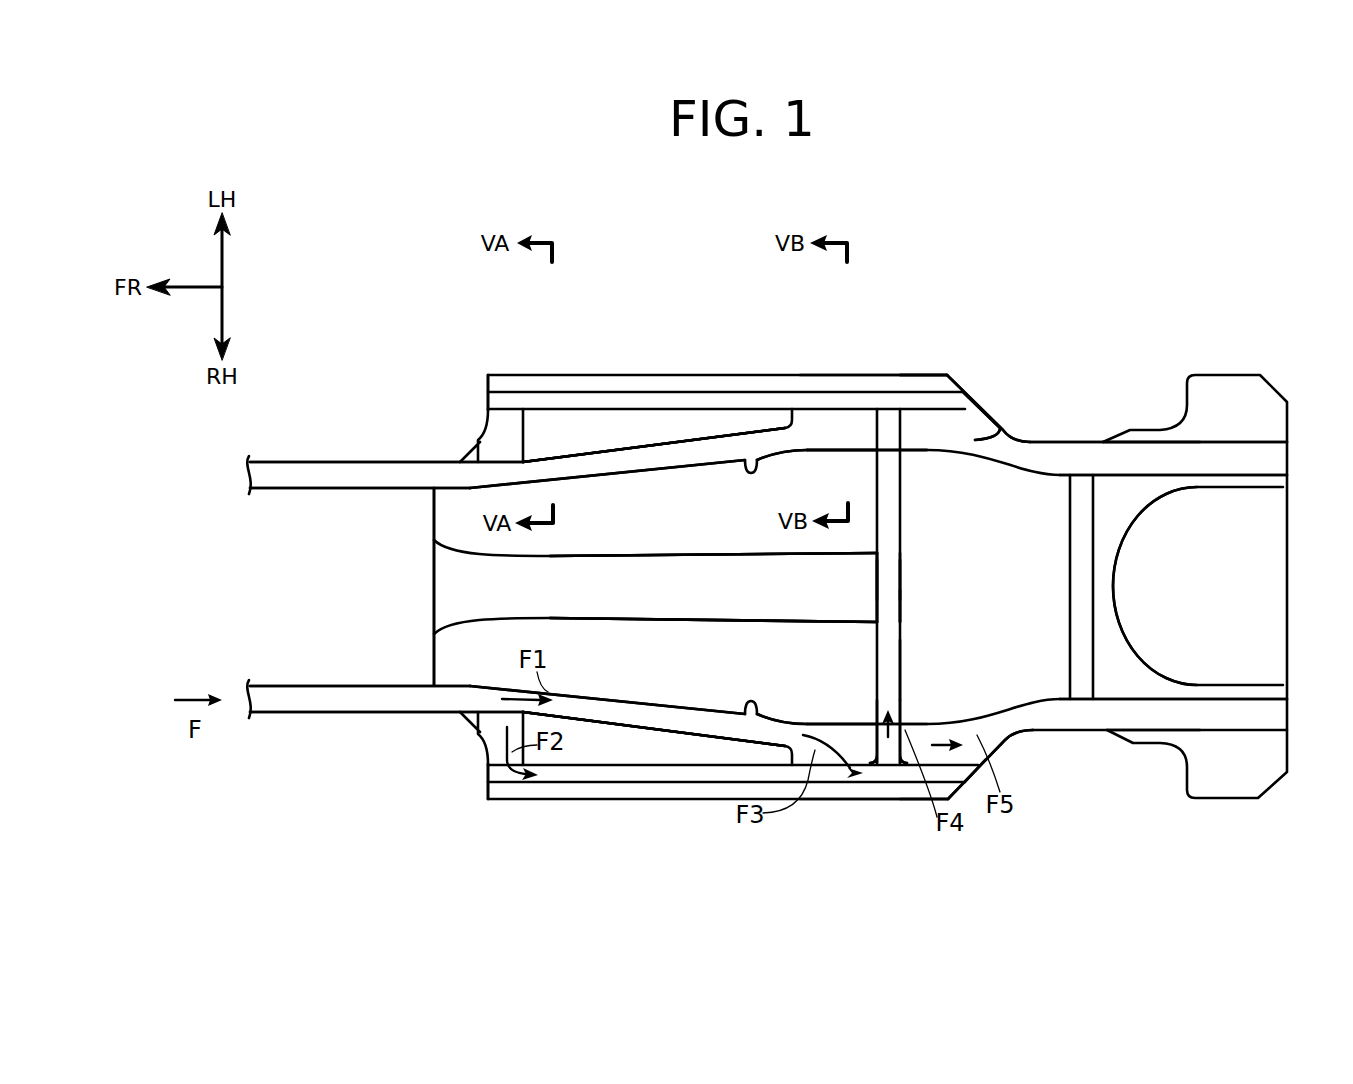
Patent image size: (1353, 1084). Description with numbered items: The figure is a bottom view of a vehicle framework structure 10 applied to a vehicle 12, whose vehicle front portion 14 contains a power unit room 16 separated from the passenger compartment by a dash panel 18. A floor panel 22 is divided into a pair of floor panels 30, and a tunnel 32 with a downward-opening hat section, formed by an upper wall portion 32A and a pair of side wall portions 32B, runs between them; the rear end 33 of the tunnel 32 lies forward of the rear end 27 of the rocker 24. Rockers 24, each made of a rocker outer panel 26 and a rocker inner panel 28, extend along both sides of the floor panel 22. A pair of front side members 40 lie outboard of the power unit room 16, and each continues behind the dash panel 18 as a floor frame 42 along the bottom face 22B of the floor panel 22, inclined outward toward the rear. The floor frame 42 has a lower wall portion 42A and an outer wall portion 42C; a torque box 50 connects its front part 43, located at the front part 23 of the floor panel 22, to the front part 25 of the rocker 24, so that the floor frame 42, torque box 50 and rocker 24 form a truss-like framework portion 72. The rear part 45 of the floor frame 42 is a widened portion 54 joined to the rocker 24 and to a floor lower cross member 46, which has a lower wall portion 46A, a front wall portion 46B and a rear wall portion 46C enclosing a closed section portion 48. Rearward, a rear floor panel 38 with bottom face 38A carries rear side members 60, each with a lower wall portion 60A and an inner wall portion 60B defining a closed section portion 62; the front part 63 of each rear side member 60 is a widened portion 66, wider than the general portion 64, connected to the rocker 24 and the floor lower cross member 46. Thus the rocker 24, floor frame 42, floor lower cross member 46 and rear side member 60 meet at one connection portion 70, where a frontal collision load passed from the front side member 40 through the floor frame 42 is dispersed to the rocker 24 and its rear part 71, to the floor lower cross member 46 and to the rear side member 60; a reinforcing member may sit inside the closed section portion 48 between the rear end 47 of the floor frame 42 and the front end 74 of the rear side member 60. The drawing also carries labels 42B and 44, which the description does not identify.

The vehicle framework structure 10 is at (848, 363).
The vehicle 12 is at (1140, 279).
The vehicle front portion 14 is at (413, 364).
The power unit room 16 is at (296, 599).
The dash panel 18 is at (432, 596).
The floor panel 22 is at (867, 587).
The bottom face of floor panel 22B is at (870, 482).
The front part of floor panel 23 is at (445, 668).
The rocker 24 is at (760, 586).
The front part of rocker 25 is at (510, 378).
The rocker outer panel 26 is at (598, 383).
The rear end of rocker 27 is at (967, 377).
The rocker inner panel 28 is at (577, 307).
The floor panel 30 is at (867, 513).
The tunnel 32 is at (712, 570).
The upper wall portion 32A is at (670, 560).
The side wall portion 32B is at (748, 560).
The rear end of tunnel 33 is at (873, 603).
The rear floor panel 38 is at (1053, 565).
The bottom face of rear floor panel 38A is at (1053, 607).
The front side member 40 is at (332, 475).
The floor frame 42 is at (618, 482).
The lower wall portion 42A is at (700, 440).
The lower surface of inclined plate 42B is at (763, 458).
The outer wall portion 42C is at (600, 450).
The front part of floor frame 43 is at (443, 477).
The cavity 44 is at (493, 475).
The rear part of floor frame 45 is at (810, 440).
The floor lower cross member 46 is at (897, 572).
The lower wall portion 46A is at (888, 612).
The front wall portion 46B is at (877, 580).
The rear wall portion 46C is at (900, 662).
The rear end of floor frame 47 is at (882, 752).
The closed section portion 48 is at (888, 580).
The torque box 50 is at (490, 442).
The widened portion 54 is at (843, 440).
The rear side member 60 is at (1090, 440).
The lower wall portion 60A is at (1057, 452).
The inner wall portion 60B is at (1033, 480).
The closed section portion 62 is at (1190, 457).
The front part of rear side member 63 is at (953, 425).
The general portion 64 is at (1153, 447).
The widened portion 66 is at (1000, 427).
The connection portion 70 is at (890, 374).
The rear part of rocker 71 is at (928, 387).
The framework portion 72 is at (575, 486).
The front end of rear side member 74 is at (918, 733).